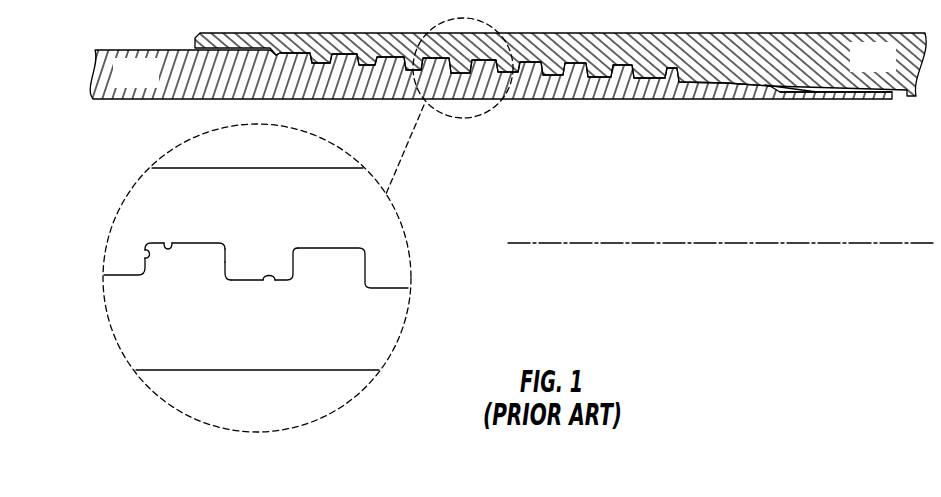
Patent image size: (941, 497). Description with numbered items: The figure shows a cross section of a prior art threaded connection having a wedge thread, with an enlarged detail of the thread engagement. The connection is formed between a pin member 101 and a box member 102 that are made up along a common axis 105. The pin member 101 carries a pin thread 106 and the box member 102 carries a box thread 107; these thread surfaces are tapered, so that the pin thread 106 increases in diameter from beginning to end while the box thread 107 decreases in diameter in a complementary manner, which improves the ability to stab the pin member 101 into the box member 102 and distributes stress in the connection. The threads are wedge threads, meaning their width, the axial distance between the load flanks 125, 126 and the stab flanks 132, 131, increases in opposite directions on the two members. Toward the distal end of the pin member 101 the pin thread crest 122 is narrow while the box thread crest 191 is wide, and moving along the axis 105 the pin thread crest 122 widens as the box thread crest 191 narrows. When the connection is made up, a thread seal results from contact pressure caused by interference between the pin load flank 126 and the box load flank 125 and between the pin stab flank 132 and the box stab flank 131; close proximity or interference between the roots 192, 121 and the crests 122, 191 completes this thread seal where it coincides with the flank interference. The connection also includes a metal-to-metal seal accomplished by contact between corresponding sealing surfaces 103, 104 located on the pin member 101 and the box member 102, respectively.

The pin member 101 is at (153, 85).
The box member 102 is at (890, 69).
The sealing surface 103 is at (795, 85).
The sealing surface 104 is at (777, 92).
The axis 105 is at (689, 246).
The pin thread 106 is at (168, 256).
The box thread 107 is at (276, 288).
The root 121 is at (172, 243).
The pin thread crest 122 is at (200, 243).
The box load flank 125 is at (142, 253).
The pin load flank 126 is at (141, 266).
The box stab flank 131 is at (226, 270).
The pin stab flank 132 is at (226, 260).
The box thread crest 191 is at (238, 283).
The root 192 is at (275, 283).